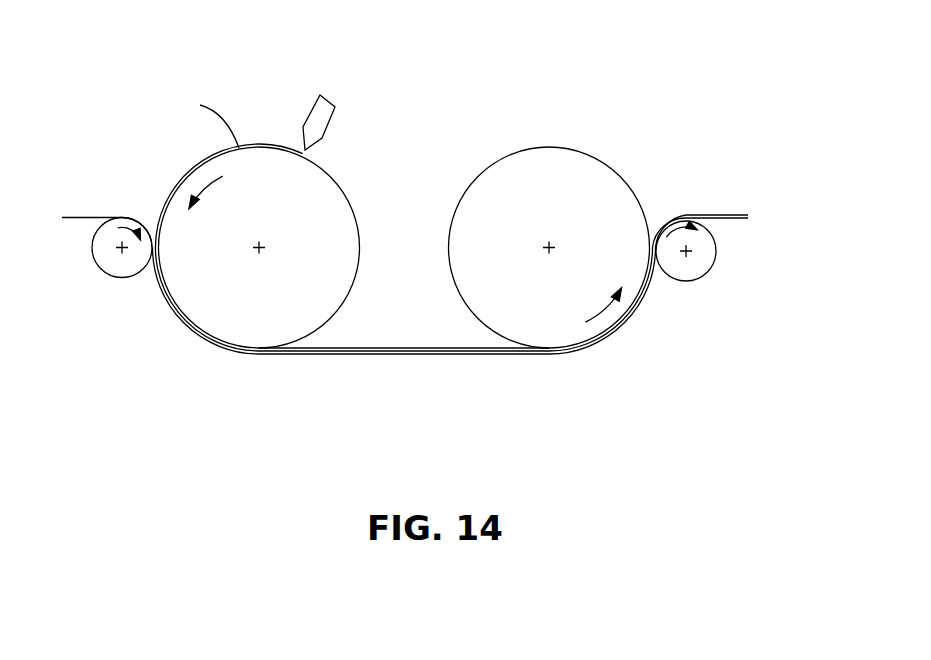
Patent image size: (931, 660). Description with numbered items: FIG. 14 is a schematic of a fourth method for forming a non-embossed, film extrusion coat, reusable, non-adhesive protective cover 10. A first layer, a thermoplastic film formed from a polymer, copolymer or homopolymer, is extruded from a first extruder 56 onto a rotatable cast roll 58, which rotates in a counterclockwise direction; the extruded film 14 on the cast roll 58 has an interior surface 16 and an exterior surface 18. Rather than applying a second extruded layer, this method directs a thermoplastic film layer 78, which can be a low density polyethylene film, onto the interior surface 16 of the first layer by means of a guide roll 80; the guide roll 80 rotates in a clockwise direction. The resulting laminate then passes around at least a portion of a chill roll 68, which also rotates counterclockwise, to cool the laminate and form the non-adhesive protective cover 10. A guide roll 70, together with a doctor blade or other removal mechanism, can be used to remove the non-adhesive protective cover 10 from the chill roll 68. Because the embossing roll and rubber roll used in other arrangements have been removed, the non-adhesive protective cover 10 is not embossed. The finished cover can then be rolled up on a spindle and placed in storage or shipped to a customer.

The non-adhesive protective cover 10 is at (744, 205).
The coating layer 14 is at (239, 148).
The interior surface 16 is at (277, 147).
The exterior surface 18 is at (303, 153).
The first extruder 56 is at (323, 108).
The cast roll 58 is at (312, 198).
The chill roll 68 is at (599, 163).
The guide roll 70 is at (713, 264).
The thermoplastic film layer 78 is at (77, 218).
The guide roll 80 is at (103, 273).